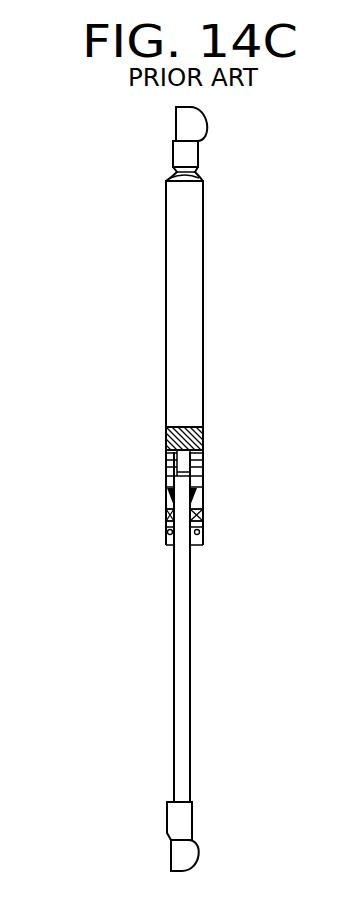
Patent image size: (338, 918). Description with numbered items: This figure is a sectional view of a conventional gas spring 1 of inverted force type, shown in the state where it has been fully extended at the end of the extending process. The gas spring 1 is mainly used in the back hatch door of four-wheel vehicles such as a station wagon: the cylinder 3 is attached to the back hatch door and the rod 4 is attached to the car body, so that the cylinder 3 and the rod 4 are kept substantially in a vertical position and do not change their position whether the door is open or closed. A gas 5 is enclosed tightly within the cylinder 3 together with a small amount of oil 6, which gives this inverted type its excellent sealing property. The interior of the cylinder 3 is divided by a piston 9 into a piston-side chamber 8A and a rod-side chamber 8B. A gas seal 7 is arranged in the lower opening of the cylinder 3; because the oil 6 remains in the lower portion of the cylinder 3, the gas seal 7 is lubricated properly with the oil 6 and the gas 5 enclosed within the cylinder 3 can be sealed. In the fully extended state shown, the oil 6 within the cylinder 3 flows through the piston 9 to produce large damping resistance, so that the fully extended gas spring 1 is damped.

The gas spring 1 is at (196, 489).
The cylinder 3 is at (185, 363).
The rod 4 is at (189, 690).
The gas 5 is at (195, 311).
The oil 6 is at (203, 430).
The gas seal 7 is at (186, 512).
The piston-side chamber 8A is at (170, 377).
The rod-side chamber 8B is at (166, 497).
The piston 9 is at (166, 461).